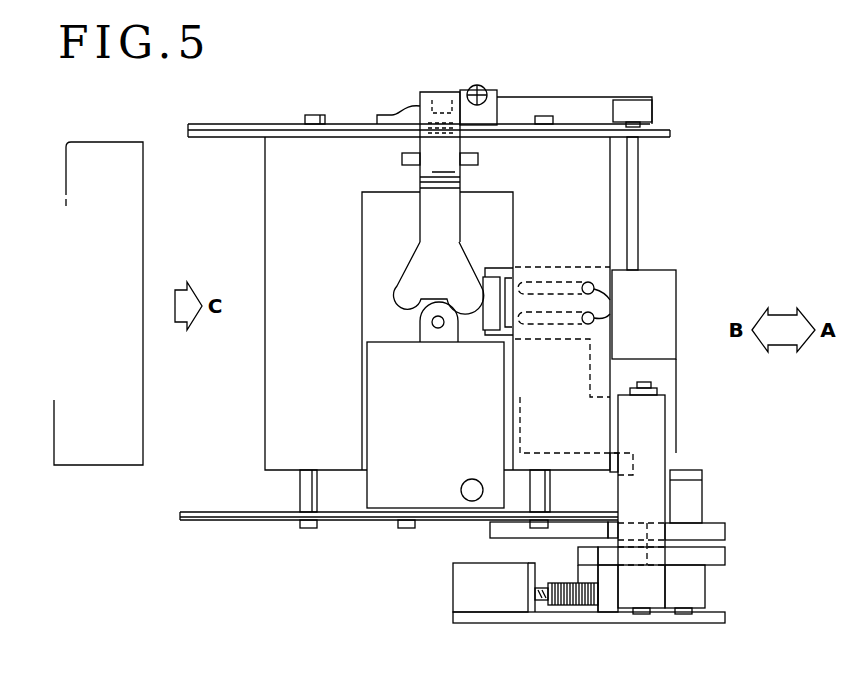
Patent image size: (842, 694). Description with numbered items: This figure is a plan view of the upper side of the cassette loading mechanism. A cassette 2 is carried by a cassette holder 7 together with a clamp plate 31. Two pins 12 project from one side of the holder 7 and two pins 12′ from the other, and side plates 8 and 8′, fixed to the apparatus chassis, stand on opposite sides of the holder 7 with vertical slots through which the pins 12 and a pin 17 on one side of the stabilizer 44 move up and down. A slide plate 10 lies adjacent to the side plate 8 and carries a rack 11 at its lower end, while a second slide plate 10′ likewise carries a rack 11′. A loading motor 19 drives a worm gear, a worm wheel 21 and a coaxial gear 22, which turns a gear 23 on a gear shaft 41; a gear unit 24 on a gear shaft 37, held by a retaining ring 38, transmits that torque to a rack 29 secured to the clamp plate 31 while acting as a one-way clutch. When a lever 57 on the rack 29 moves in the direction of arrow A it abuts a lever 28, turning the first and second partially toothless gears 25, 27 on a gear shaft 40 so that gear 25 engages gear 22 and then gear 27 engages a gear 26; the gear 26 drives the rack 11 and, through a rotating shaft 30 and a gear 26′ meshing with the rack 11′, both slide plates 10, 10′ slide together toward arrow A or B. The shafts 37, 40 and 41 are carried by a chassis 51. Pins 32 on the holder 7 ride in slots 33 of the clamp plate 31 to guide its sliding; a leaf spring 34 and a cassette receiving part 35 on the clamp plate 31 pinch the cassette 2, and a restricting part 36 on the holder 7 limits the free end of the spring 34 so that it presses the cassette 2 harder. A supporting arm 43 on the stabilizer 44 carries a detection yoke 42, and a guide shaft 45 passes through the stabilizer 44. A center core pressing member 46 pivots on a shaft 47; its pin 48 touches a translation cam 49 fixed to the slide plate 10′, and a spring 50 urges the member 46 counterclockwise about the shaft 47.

The cassette 2 is at (125, 140).
The cassette holder 7 is at (265, 446).
The side plate 8 is at (194, 512).
The side plate 8′ is at (207, 137).
The slide plate 10 is at (190, 520).
The slide plate 10′ is at (205, 124).
The rack 11 is at (490, 532).
The rack 11′ is at (520, 100).
The pins 12 is at (305, 530).
The pins 12′ is at (315, 115).
The pin 17 is at (405, 530).
The loading motor 19 is at (465, 622).
The worm wheel 21 is at (545, 605).
The gear 22 is at (580, 605).
The gear 23 is at (580, 556).
The gear unit 24 is at (660, 435).
The first partially toothless gear 25 is at (726, 556).
The gear 26 is at (613, 530).
The gear 26′ is at (632, 100).
The second partially toothless gear 27 is at (715, 530).
The lever 28 is at (700, 478).
The rack 29 is at (676, 412).
The rotating shaft 30 is at (638, 183).
The clamp plate 31 is at (676, 280).
The pins 32 is at (610, 302).
The slots 33 is at (537, 313).
The leaf spring 34 is at (498, 280).
The cassette receiving part 35 is at (490, 277).
The restricting part 36 is at (510, 300).
The gear shaft 37 is at (651, 384).
The retaining ring 38 is at (658, 391).
The gear shaft 40 is at (683, 615).
The gear shaft 41 is at (605, 612).
The detection yoke 42 is at (438, 330).
The supporting arm 43 is at (420, 332).
The stabilizer 44 is at (380, 508).
The guide shaft 45 is at (472, 479).
The center core pressing member 46 is at (400, 302).
The shaft 47 is at (402, 158).
The pin 48 is at (441, 112).
The translation cam 49 is at (398, 112).
The spring 50 is at (478, 85).
The chassis 51 is at (710, 623).
The lever 57 is at (614, 472).